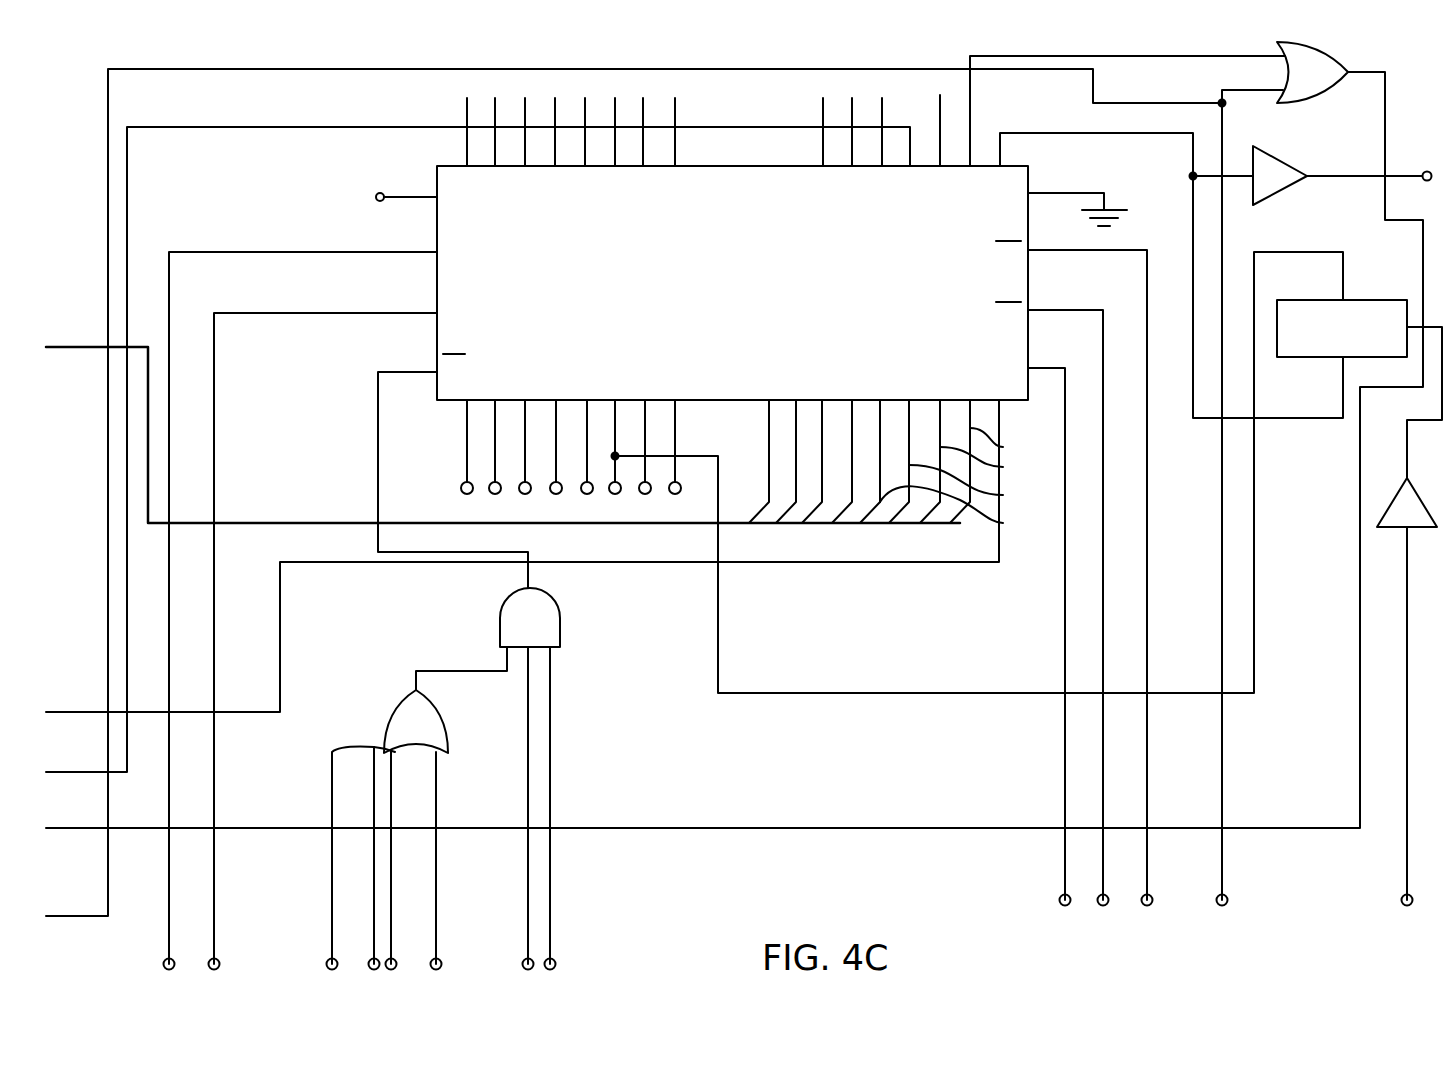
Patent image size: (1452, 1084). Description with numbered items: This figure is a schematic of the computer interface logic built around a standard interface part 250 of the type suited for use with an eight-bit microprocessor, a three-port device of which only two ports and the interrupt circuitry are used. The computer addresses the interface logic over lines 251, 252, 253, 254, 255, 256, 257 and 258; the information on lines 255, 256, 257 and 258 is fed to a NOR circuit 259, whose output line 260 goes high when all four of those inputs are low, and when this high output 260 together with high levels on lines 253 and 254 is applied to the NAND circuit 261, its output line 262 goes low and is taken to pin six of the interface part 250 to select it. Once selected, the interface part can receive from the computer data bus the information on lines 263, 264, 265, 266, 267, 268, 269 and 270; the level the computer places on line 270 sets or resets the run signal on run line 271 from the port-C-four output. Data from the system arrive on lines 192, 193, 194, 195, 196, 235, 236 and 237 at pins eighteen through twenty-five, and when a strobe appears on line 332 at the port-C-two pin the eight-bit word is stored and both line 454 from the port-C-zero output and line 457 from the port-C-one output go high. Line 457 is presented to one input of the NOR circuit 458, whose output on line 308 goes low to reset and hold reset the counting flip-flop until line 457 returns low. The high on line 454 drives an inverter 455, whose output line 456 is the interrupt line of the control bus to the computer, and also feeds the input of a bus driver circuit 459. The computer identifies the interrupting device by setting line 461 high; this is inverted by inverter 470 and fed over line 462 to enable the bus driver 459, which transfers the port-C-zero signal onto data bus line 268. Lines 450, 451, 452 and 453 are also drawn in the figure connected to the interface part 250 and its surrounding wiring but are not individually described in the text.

The interface part 250 is at (437, 327).
The run line 271 is at (318, 127).
The line 453 is at (88, 916).
The line 252 is at (169, 752).
The line 251 is at (214, 432).
The output line 262 is at (378, 480).
The line 196 is at (860, 495).
The line 237 is at (762, 492).
The line 236 is at (790, 500).
The line 235 is at (822, 495).
The line 192 is at (1010, 445).
The line 193 is at (995, 464).
The line 194 is at (980, 487).
The line 195 is at (965, 512).
The computer data bus line 263 is at (467, 432).
The computer data bus line 264 is at (495, 456).
The computer data bus line 265 is at (525, 475).
The computer data bus line 266 is at (552, 480).
The computer data bus line 267 is at (590, 478).
The computer data bus line 268 is at (618, 480).
The computer data bus line 269 is at (648, 478).
The computer data bus line 270 is at (675, 437).
The line 332 is at (300, 565).
The NAND circuit 261 is at (500, 617).
The output line 260 is at (455, 671).
The NOR circuit 259 is at (390, 725).
The line 258 is at (332, 792).
The line 257 is at (374, 815).
The line 256 is at (391, 880).
The line 255 is at (436, 890).
The line 254 is at (528, 888).
The line 253 is at (550, 940).
The write line 450 is at (1147, 613).
The read line 451 is at (1103, 580).
The reset line 452 is at (1065, 625).
The line 454 is at (1070, 133).
The line 457 is at (1145, 56).
The NOR circuit 458 is at (1310, 102).
The line 308 is at (1385, 115).
The inverter 455 is at (1265, 205).
The line 456 is at (1330, 176).
The bus driver circuit 459 is at (1298, 300).
The line 462 is at (1407, 438).
The inverter 470 is at (1385, 510).
The line 461 is at (1407, 768).